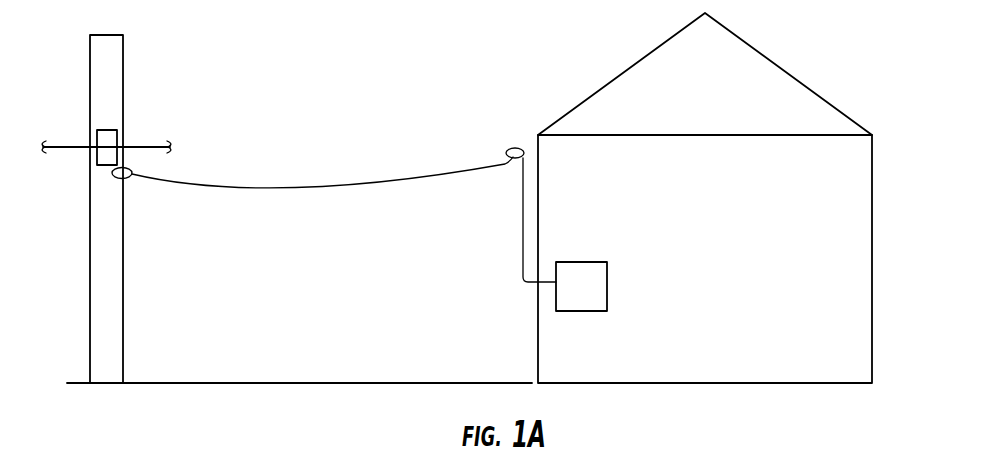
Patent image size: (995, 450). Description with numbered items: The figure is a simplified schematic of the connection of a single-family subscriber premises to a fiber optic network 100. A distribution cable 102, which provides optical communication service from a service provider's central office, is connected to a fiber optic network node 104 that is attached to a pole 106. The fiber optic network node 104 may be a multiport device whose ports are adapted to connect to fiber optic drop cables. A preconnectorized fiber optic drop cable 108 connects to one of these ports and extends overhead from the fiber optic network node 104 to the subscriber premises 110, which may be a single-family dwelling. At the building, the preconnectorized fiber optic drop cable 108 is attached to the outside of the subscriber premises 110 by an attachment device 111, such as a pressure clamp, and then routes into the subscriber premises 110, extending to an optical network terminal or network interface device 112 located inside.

The fiber optic network 100 is at (332, 92).
The distribution cable 102 is at (68, 147).
The fiber optic network node 104 is at (117, 136).
The pole 106 is at (90, 62).
The preconnectorized fiber optic drop cable 108 is at (295, 186).
The subscriber premises 110 is at (612, 78).
The attachment device 111 is at (510, 148).
The optical network terminal or network interface device (ONT/NID) 112 is at (580, 262).